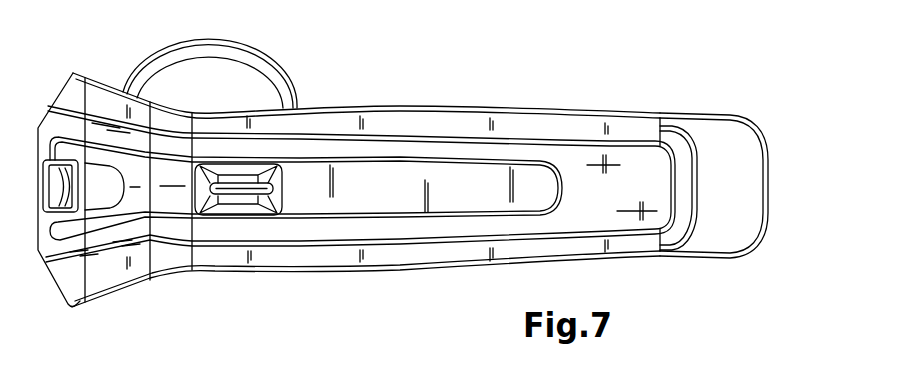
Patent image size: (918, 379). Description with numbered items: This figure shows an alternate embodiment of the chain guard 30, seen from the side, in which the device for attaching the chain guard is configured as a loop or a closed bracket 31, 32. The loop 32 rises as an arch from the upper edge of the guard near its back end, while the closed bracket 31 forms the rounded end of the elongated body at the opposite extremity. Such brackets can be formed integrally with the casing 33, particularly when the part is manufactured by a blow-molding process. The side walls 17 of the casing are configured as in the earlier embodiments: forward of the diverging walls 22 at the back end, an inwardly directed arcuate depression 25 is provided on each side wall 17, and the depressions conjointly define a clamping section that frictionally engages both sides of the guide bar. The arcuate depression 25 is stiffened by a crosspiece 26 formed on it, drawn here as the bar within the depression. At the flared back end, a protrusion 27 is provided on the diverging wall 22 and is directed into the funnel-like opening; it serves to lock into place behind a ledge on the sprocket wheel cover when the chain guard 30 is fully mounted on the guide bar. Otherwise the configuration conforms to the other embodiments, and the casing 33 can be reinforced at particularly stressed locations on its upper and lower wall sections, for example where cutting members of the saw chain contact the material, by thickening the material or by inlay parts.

The side wall 17 is at (519, 145).
The diverging wall 22 is at (103, 247).
The arcuate depression 25 is at (235, 204).
The crosspiece 26 is at (248, 198).
The protrusion 27 is at (53, 155).
The chain guard 30 is at (380, 87).
The closed bracket 31 is at (733, 128).
The loop 32 is at (264, 75).
The casing 33 is at (465, 102).